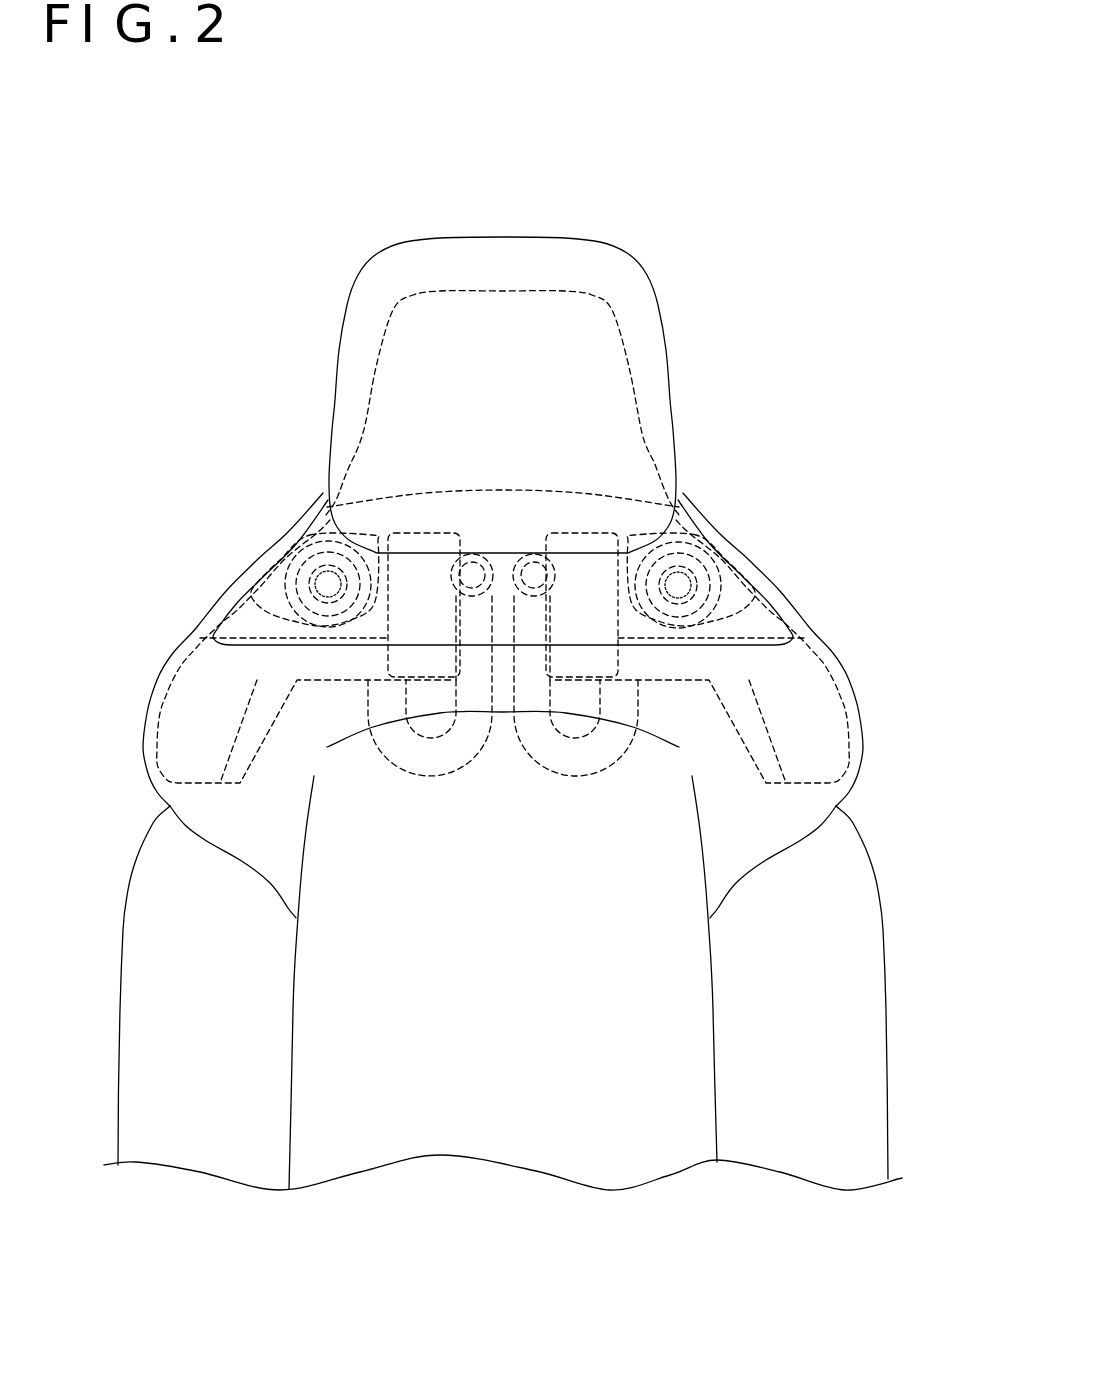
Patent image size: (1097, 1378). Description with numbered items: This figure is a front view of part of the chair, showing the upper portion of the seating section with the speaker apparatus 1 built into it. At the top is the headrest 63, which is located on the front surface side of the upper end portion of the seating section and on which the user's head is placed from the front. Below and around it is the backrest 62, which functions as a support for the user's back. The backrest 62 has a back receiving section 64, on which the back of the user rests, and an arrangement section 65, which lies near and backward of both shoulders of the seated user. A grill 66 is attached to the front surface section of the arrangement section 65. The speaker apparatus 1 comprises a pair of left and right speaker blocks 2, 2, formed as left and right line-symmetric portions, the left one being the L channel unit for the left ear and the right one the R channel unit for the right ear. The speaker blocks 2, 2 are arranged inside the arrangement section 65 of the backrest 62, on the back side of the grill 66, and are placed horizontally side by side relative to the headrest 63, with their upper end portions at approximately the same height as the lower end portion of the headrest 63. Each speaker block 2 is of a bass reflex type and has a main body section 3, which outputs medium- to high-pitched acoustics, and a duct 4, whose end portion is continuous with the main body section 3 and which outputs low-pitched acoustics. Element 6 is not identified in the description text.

The speaker apparatus 1 is at (607, 411).
The speaker block 2 is at (423, 537).
The main body section 3 is at (175, 660).
The duct 4 is at (429, 778).
The speaker 6 is at (317, 572).
The backrest 62 is at (865, 948).
The headrest 63 is at (548, 253).
The back receiving section 64 is at (869, 1025).
The arrangement section 65 is at (860, 722).
The grill 66 is at (762, 612).